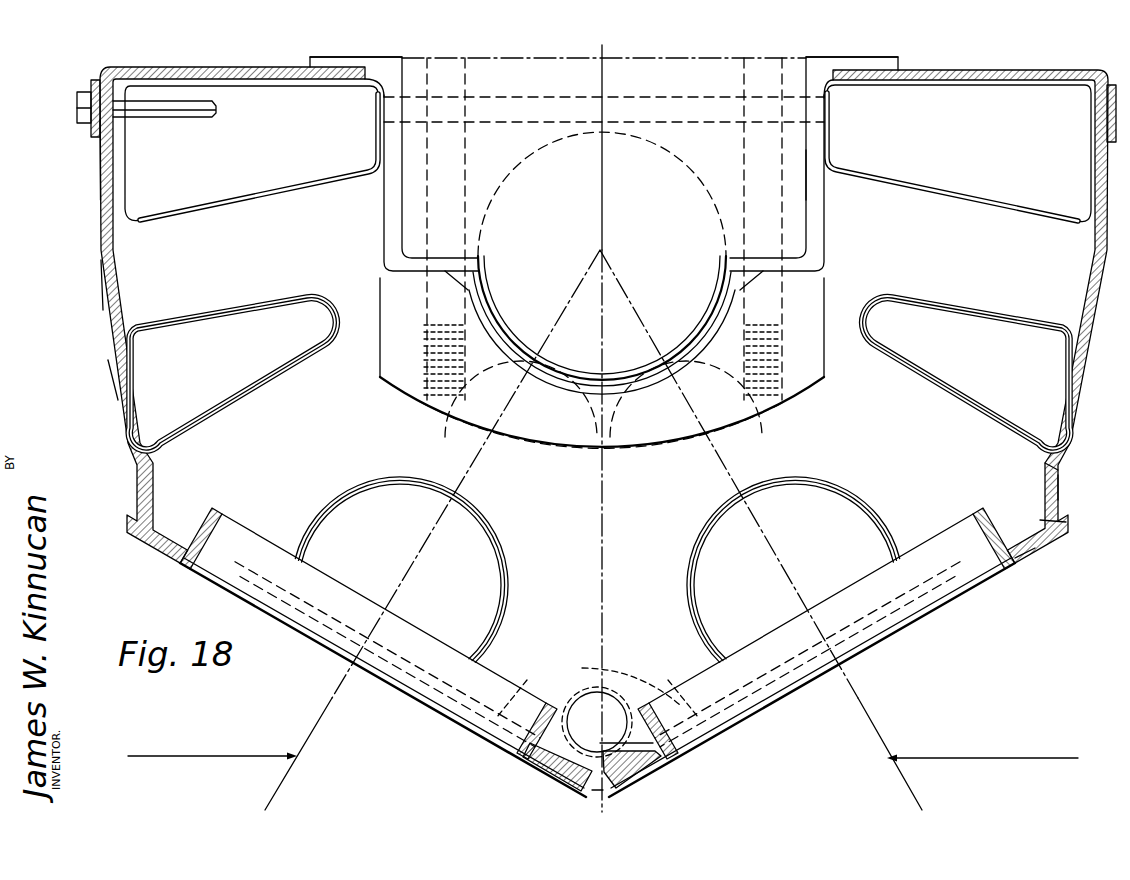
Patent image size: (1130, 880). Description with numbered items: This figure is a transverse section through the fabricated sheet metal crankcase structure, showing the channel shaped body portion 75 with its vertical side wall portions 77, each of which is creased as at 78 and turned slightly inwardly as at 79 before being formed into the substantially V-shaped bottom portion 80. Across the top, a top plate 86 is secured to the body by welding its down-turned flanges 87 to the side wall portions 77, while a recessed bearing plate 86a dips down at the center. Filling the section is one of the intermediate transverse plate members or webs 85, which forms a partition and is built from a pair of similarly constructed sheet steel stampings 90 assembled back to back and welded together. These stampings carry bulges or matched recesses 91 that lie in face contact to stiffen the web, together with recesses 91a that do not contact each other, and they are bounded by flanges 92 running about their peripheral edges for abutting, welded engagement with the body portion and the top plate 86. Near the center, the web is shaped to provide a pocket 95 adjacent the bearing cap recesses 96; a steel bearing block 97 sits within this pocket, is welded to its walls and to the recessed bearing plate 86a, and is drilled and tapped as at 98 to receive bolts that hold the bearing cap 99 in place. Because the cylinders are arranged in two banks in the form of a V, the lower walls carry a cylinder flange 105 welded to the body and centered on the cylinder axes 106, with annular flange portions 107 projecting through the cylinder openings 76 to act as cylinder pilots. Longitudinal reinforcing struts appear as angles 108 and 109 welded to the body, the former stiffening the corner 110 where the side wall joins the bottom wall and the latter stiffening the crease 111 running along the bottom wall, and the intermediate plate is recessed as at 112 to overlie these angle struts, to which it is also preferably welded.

The channel shaped body portion 75 is at (103, 267).
The cylinder openings 76 is at (180, 553).
The vertical side wall portions 77 is at (103, 172).
The crease 78 is at (102, 295).
The inwardly turned portion 79 is at (118, 380).
The V-shaped bottom portion 80 is at (150, 540).
The intermediate transverse plate members or webs 85 is at (240, 464).
The top plate 86 is at (300, 66).
The recessed bearing plate 86a is at (395, 184).
The down-turned flanges 87 is at (97, 85).
The sheet steel stampings 90 is at (609, 272).
The bulges or matched recesses 91 is at (250, 322).
The recesses 91a is at (608, 153).
The flanges 92 is at (116, 268).
The pocket 95 is at (835, 300).
The bearing cap recesses 96 is at (830, 215).
The steel bearing block 97 is at (830, 378).
The drilled and tapped holes 98 is at (374, 372).
The bearing cap 99 is at (678, 85).
The cylinder flange 105 is at (1027, 560).
The cylinder axes 106 is at (340, 712).
The annular flange portions 107 is at (993, 523).
The angle strut 108 is at (1064, 483).
The angle strut 109 is at (640, 762).
The corner 110 is at (1068, 518).
The crease 111 is at (597, 797).
The recesses 112 is at (1045, 467).